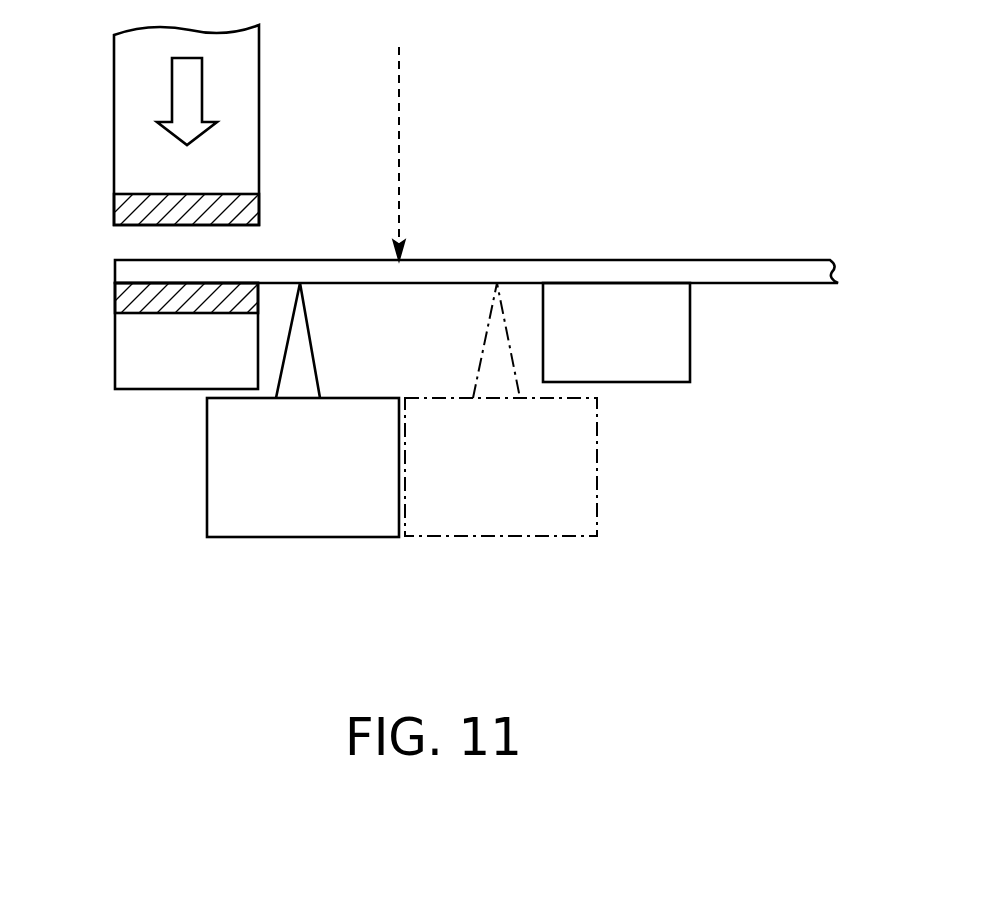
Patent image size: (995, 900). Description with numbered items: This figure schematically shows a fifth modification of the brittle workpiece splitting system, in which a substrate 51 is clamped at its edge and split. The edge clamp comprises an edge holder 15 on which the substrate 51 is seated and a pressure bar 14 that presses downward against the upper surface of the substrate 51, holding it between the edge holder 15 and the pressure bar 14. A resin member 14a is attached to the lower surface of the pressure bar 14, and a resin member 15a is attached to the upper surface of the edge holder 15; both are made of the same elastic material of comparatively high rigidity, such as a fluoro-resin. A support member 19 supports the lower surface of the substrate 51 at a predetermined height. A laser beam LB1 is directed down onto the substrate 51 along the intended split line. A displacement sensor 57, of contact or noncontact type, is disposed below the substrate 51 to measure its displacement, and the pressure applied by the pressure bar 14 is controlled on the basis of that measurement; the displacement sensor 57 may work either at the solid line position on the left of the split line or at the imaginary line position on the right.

The pressure bar 14 is at (248, 87).
The resin member 14a is at (252, 208).
The edge holder 15 is at (126, 357).
The resin member 15a is at (124, 302).
The support member 19 is at (665, 327).
The substrate 51 is at (760, 270).
The displacement sensor 57 is at (440, 527).
The laser beams LB1, LB2 LB1 is at (399, 108).